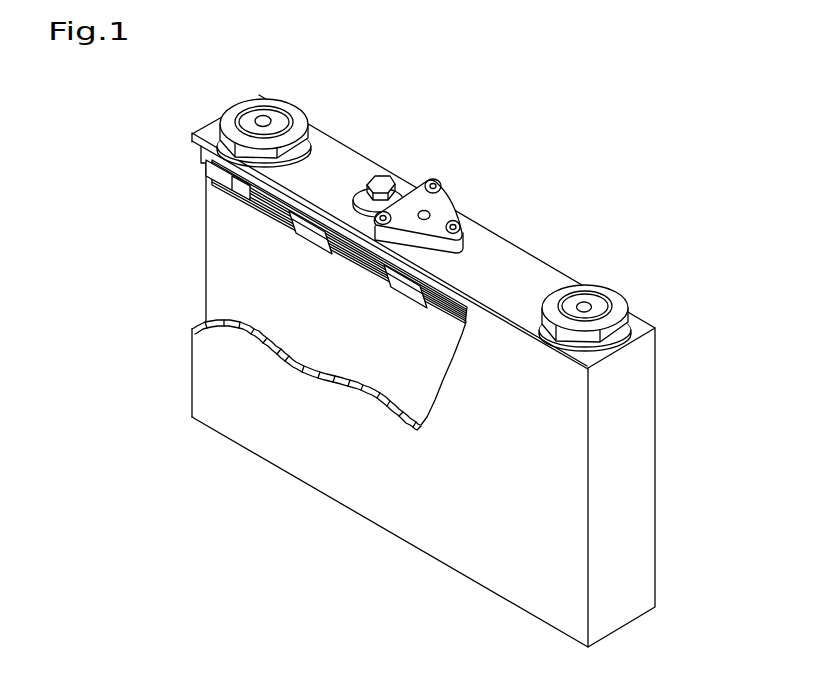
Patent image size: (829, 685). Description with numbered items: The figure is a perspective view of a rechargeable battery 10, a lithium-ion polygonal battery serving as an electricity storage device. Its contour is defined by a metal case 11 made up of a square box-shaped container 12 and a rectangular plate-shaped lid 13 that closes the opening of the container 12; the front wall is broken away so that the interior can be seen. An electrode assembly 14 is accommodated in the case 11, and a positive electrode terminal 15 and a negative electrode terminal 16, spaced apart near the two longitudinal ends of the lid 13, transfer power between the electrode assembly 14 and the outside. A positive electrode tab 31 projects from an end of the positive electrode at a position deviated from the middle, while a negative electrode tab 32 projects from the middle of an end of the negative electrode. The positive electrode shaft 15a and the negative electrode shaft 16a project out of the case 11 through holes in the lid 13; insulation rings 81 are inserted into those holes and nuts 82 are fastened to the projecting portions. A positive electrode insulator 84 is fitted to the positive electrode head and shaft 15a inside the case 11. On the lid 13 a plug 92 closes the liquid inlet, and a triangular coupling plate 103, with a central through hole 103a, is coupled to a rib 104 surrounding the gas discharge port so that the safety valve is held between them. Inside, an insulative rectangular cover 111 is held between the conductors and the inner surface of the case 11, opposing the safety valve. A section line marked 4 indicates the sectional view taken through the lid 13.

The section line IV-IV 4 is at (197, 83).
The rechargeable battery 10 is at (674, 181).
The case 11 is at (706, 322).
The container 12 is at (660, 360).
The lid 13 is at (660, 326).
The electrode assembly 14 is at (195, 256).
The positive electrode terminal 15 is at (271, 117).
The positive electrode shaft 15a is at (281, 118).
The negative electrode terminal 16 is at (598, 298).
The negative electrode shaft 16a is at (577, 298).
The positive electrode tab 31 is at (303, 224).
The negative electrode tab 32 is at (407, 298).
The insulation ring 81 is at (214, 136).
The nut 82 is at (244, 108).
The positive electrode insulator 84 is at (236, 171).
The plug 92 is at (380, 177).
The coupling plate 103 is at (440, 198).
The through hole 103a is at (425, 207).
The rib 104 is at (430, 250).
The cover 111 is at (353, 262).